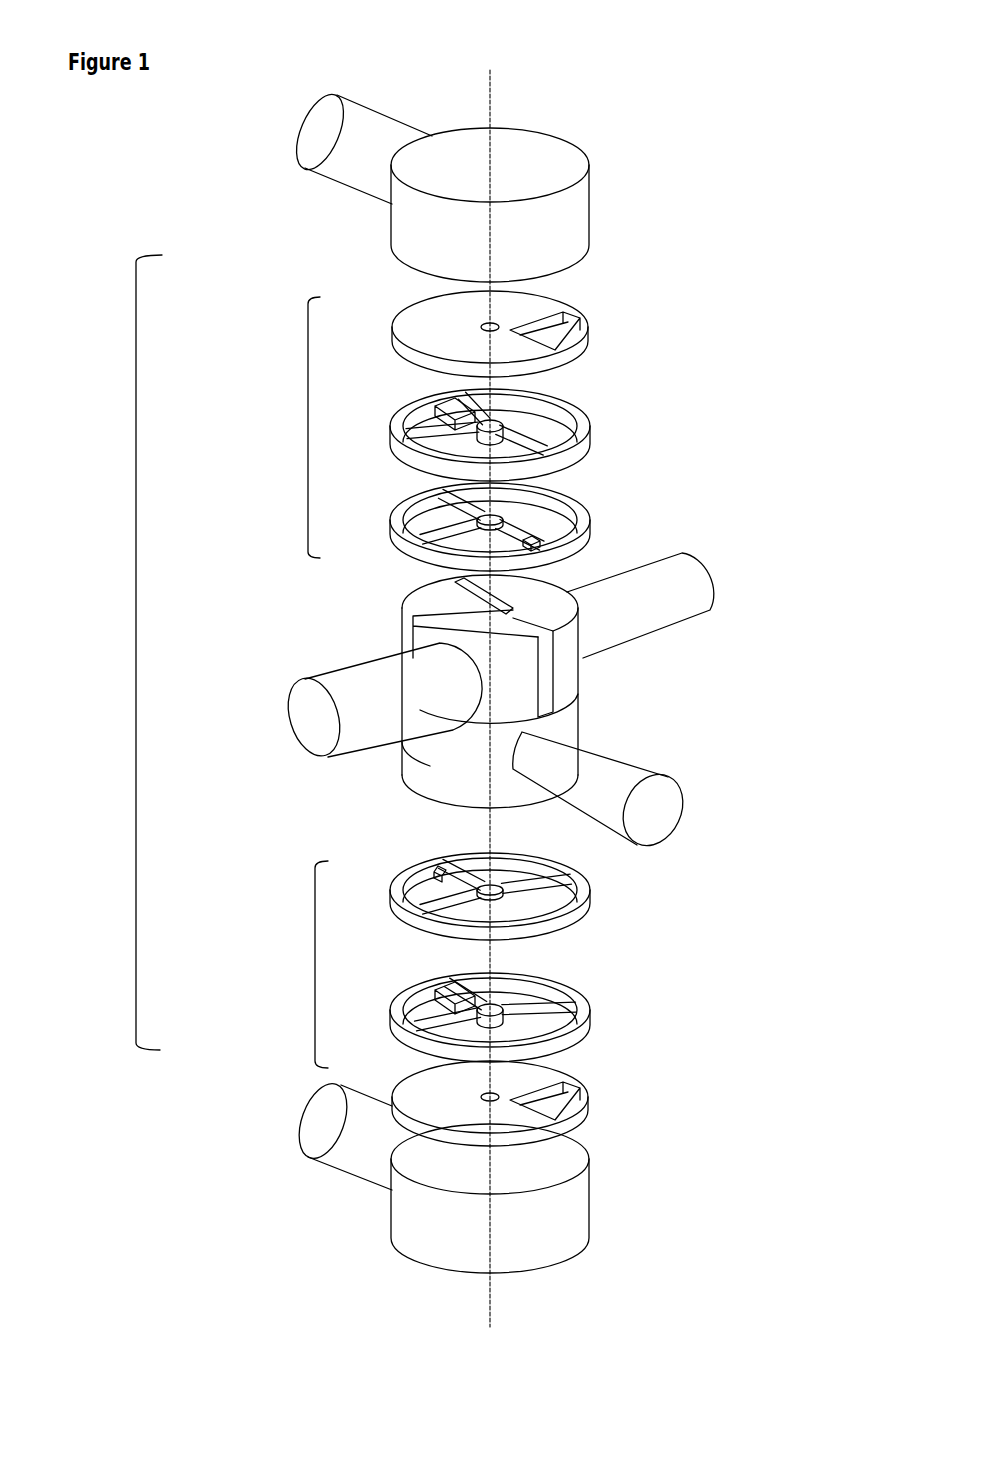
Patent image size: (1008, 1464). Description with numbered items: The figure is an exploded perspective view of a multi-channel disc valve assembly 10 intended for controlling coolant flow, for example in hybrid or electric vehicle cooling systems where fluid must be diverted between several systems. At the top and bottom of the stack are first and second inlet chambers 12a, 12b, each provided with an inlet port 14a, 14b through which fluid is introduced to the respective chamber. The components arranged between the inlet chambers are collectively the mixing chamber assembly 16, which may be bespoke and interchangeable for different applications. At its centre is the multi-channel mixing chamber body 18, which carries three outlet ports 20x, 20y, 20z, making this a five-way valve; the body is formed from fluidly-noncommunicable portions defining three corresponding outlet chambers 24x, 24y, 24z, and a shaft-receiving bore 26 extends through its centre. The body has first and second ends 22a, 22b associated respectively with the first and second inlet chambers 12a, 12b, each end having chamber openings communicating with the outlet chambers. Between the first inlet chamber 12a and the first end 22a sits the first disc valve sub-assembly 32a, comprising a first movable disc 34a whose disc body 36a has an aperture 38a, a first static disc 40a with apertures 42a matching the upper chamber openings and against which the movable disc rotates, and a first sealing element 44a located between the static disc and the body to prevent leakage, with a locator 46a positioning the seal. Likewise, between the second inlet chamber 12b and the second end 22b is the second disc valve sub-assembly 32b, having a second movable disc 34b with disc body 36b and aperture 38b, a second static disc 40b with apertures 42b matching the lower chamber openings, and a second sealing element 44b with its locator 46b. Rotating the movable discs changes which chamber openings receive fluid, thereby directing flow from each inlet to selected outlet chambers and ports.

The multi-channel disc valve assembly 10 is at (705, 223).
The first inlet chamber 12a is at (578, 133).
The second inlet chamber 12b is at (582, 1272).
The inlet port 14a is at (337, 93).
The inlet port 14b is at (352, 1160).
The mixing chamber assembly 16 is at (136, 648).
The multi-channel mixing chamber body 18 is at (595, 715).
The outlet port 20x is at (318, 683).
The outlet port 20y is at (653, 562).
The outlet port 20z is at (648, 820).
The first end 22a is at (412, 575).
The second end 22b is at (410, 801).
The outlet chamber 24x is at (443, 636).
The outlet chamber 24y is at (548, 590).
The outlet chamber 24z is at (432, 763).
The shaft-receiving bore 26 is at (483, 609).
The first disc valve sub-assembly 32a is at (308, 425).
The second disc valve sub-assembly 32b is at (315, 963).
The first movable disc 34a is at (600, 303).
The second movable disc 34b is at (610, 1125).
The disc body 36a is at (460, 315).
The disc body 36b is at (465, 1091).
The aperture 38a is at (606, 341).
The aperture 38b is at (602, 1098).
The first static disc 40a is at (601, 417).
The second static disc 40b is at (612, 1020).
The apertures 42a is at (410, 403).
The apertures 42b is at (408, 1000).
The first sealing element 44a is at (563, 493).
The second sealing element 44b is at (570, 930).
The locator 46a is at (589, 528).
The locator 46b is at (392, 900).